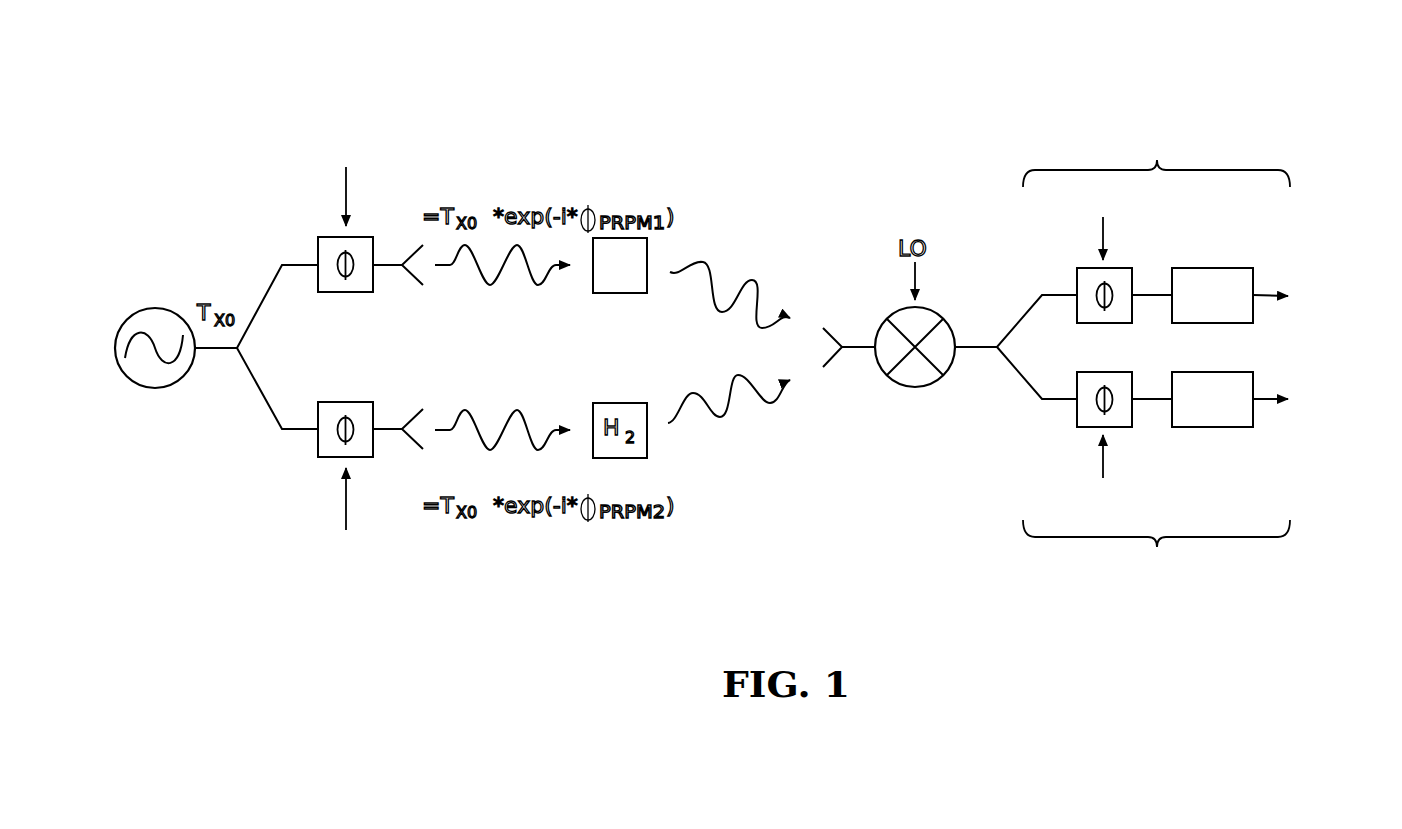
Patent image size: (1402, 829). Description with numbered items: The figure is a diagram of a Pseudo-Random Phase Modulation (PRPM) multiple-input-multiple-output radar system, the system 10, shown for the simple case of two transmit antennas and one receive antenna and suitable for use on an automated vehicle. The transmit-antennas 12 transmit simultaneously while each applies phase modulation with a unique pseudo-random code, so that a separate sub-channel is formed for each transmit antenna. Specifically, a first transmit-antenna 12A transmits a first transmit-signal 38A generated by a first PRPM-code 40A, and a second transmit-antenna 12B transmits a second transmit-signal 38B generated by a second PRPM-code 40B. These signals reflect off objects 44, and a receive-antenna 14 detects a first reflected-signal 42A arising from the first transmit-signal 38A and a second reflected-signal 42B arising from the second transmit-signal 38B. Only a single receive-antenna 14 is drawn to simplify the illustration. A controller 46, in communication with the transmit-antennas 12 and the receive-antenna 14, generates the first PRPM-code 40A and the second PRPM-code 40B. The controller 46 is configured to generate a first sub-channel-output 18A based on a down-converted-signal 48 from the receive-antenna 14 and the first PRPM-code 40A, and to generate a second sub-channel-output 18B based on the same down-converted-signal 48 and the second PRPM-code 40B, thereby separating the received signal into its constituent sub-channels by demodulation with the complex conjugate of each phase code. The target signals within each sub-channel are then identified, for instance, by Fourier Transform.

The system 10 is at (1012, 68).
The transmit-antennas 12 is at (396, 234).
The first transmit-antenna 12A is at (390, 266).
The second transmit-antenna 12B is at (385, 426).
The receive-antenna 14 is at (853, 322).
The first sub-channel-output 18A is at (1270, 290).
The second sub-channel-output 18B is at (1267, 400).
The first transmit-signal 38A is at (503, 270).
The second transmit-signal 38B is at (523, 415).
The first PRPM-code 40A is at (318, 135).
The second PRPM-code 40B is at (320, 557).
The first reflected-signal 42A is at (748, 283).
The second reflected-signal 42B is at (733, 415).
The objects 44 is at (682, 240).
The controller 46 is at (1255, 240).
The down-converted-signal 48 is at (973, 343).